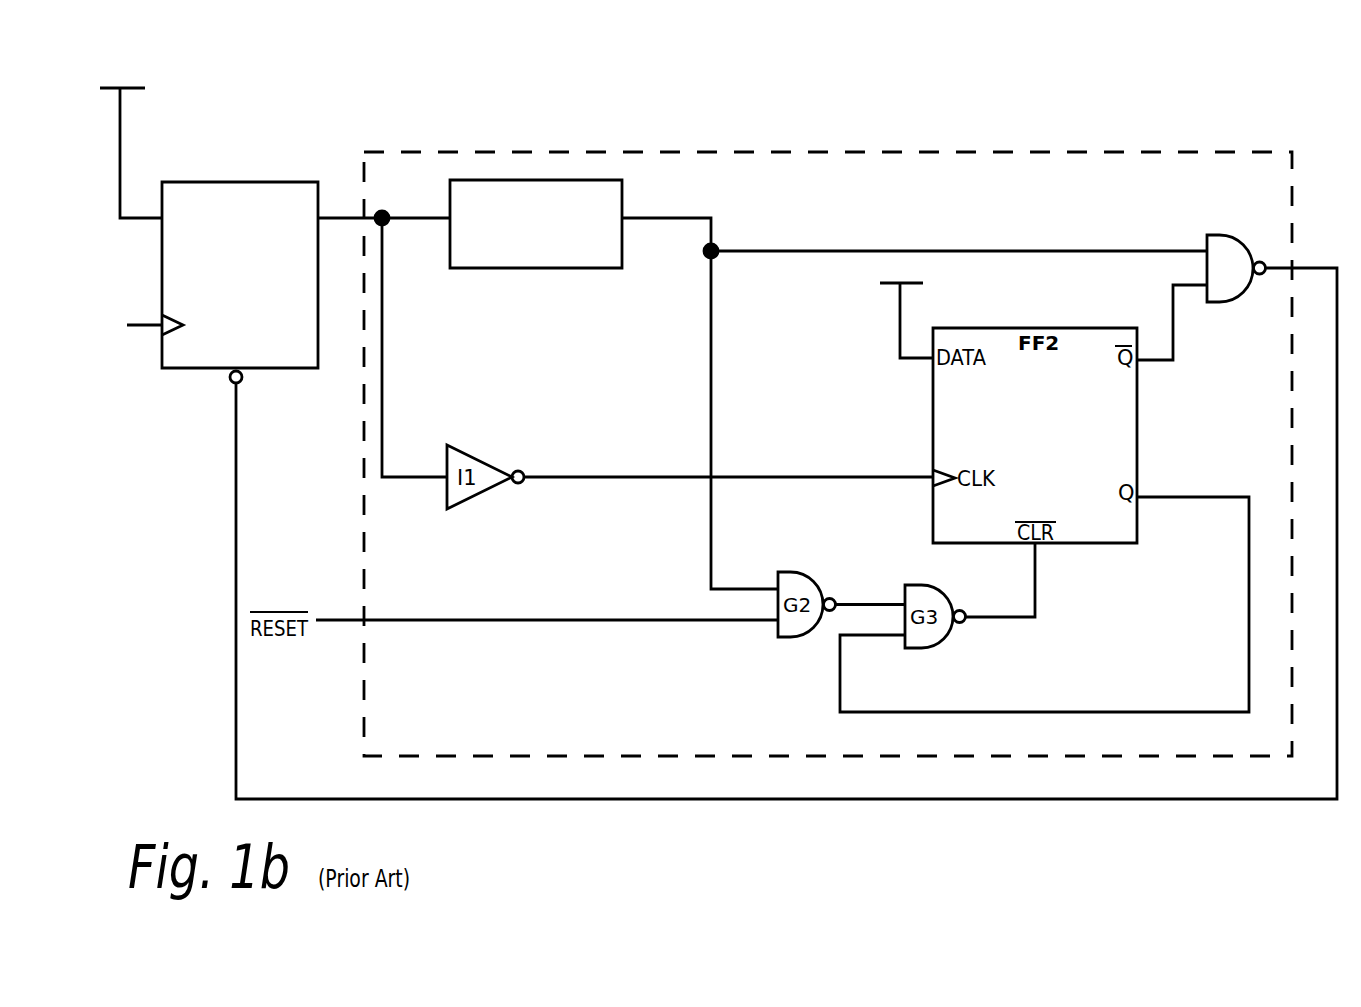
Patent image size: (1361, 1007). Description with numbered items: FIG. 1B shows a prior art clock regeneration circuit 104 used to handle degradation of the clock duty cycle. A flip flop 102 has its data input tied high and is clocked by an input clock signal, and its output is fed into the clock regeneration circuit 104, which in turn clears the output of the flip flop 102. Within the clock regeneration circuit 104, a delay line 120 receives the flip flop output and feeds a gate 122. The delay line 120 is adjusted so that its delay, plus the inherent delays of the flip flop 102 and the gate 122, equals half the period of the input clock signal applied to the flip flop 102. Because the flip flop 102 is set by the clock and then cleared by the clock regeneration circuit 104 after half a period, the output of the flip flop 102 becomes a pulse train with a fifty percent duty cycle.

The flip flop 102 is at (192, 275).
The delay line 120 is at (622, 198).
The gate 122 is at (1203, 244).
The clock regeneration circuit 104 is at (828, 454).